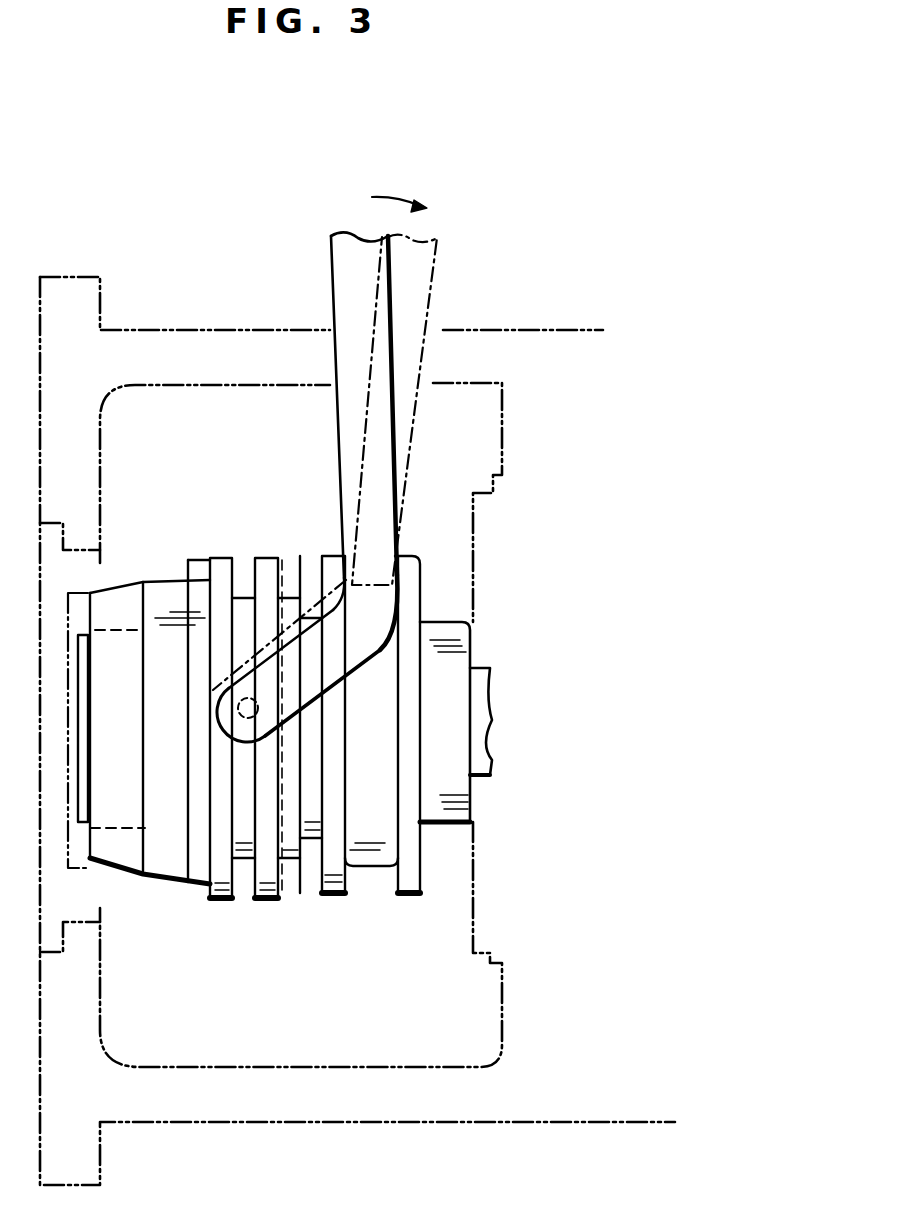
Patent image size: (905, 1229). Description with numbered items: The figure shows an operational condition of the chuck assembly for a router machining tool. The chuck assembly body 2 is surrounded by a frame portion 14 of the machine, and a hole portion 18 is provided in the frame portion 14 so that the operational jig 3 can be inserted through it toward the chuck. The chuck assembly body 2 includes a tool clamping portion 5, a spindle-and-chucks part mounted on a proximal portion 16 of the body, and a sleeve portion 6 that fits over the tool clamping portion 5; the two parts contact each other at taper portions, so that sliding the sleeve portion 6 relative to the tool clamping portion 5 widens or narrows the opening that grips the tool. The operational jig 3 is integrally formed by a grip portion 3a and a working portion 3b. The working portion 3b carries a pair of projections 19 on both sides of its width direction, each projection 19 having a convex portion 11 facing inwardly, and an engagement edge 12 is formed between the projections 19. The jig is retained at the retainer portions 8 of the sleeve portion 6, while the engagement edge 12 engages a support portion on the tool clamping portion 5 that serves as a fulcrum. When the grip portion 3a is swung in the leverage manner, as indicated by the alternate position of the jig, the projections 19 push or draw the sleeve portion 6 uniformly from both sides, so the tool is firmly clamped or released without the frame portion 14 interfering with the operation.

The chuck assembly body 2 is at (147, 582).
The operational jig 3 is at (342, 299).
The grip portion 3a is at (437, 268).
The working portion 3b is at (362, 662).
The tool clamping portion 5 is at (76, 822).
The sleeve portion 6 is at (199, 886).
The retainer portion 8 is at (250, 745).
The convex portion 11 is at (233, 731).
The engagement edge 12 is at (341, 572).
The frame portion 14 is at (137, 328).
The proximal portion 16 is at (470, 541).
The hole portion 18 is at (208, 386).
The projection 19 is at (393, 608).